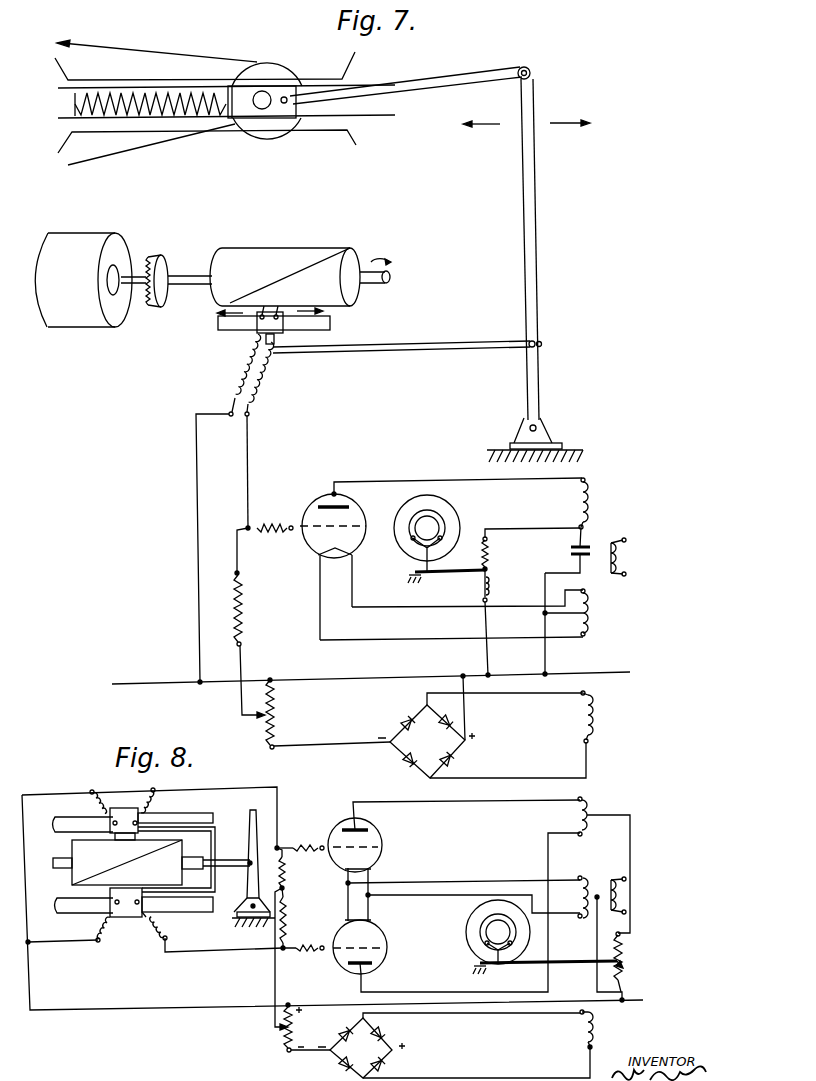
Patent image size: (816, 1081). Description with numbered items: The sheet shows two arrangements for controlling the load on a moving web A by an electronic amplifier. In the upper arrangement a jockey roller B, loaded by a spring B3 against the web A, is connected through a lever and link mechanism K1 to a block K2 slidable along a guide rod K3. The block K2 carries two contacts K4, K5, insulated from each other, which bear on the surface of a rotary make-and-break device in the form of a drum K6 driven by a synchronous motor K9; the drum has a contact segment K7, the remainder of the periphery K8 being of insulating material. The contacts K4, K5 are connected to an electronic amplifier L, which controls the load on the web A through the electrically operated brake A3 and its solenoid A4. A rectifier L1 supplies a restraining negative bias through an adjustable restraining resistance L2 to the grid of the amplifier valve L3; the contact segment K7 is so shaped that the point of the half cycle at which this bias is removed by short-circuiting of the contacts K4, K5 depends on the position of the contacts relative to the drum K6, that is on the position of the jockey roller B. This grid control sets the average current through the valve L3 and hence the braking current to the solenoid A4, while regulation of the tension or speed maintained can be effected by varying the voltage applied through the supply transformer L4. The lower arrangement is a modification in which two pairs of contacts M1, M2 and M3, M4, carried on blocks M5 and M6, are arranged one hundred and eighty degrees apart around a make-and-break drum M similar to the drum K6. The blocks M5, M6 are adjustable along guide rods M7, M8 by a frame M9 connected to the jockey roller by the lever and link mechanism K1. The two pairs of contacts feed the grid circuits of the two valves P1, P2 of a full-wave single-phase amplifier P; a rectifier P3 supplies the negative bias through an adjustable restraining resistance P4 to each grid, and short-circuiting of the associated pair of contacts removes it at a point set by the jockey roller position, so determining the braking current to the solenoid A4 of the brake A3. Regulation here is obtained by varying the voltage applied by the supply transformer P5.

In FIG. 7, the web A is at (150, 149).
In FIG. 7, the jockey roller B is at (272, 68).
In FIG. 7, the spring B3 is at (127, 100).
In FIG. 7, the lever and link mechanism K1 is at (528, 213).
In FIG. 8, the lever and link mechanism K1 is at (258, 820).
In FIG. 7, the block K2 is at (280, 334).
In FIG. 7, the guide rod K3 is at (323, 322).
In FIG. 7, the contact K4 is at (263, 314).
In FIG. 7, the contact K5 is at (277, 314).
In FIG. 7, the drum K6 is at (356, 241).
In FIG. 7, the contact segment K7 is at (337, 266).
In FIG. 7, the periphery of the drum K8 is at (235, 268).
In FIG. 7, the synchronous motor K9 is at (90, 260).
In FIG. 7, the electronic amplifier L is at (307, 495).
In FIG. 7, the rectifier L1 is at (455, 742).
In FIG. 7, the adjustable restraining resistance L2 is at (277, 718).
In FIG. 7, the amplifier valve L3 is at (348, 497).
In FIG. 7, the supply transformer L4 is at (597, 530).
In FIG. 7, the electrically operated brake A3 is at (440, 520).
In FIG. 8, the electrically operated brake A3 is at (480, 928).
In FIG. 7, the solenoid A4 is at (492, 582).
In FIG. 8, the solenoid A4 is at (623, 967).
In FIG. 8, the make-and-break drum M is at (67, 850).
In FIG. 8, the contact M1 is at (110, 840).
In FIG. 8, the contact M2 is at (122, 837).
In FIG. 8, the contact M3 is at (120, 903).
In FIG. 8, the contact M4 is at (137, 903).
In FIG. 8, the block M5 is at (140, 822).
In FIG. 8, the block M6 is at (145, 907).
In FIG. 8, the guide rod M7 is at (192, 817).
In FIG. 8, the guide rod M8 is at (190, 905).
In FIG. 8, the frame M9 is at (215, 855).
In FIG. 8, the full-wave single-phase amplifier P is at (449, 846).
In FIG. 8, the amplifier valve P1 is at (375, 830).
In FIG. 8, the amplifier valve P2 is at (387, 927).
In FIG. 8, the rectifier P3 is at (397, 1058).
In FIG. 8, the adjustable restraining resistance P4 is at (280, 1030).
In FIG. 8, the supply transformer P5 is at (597, 873).